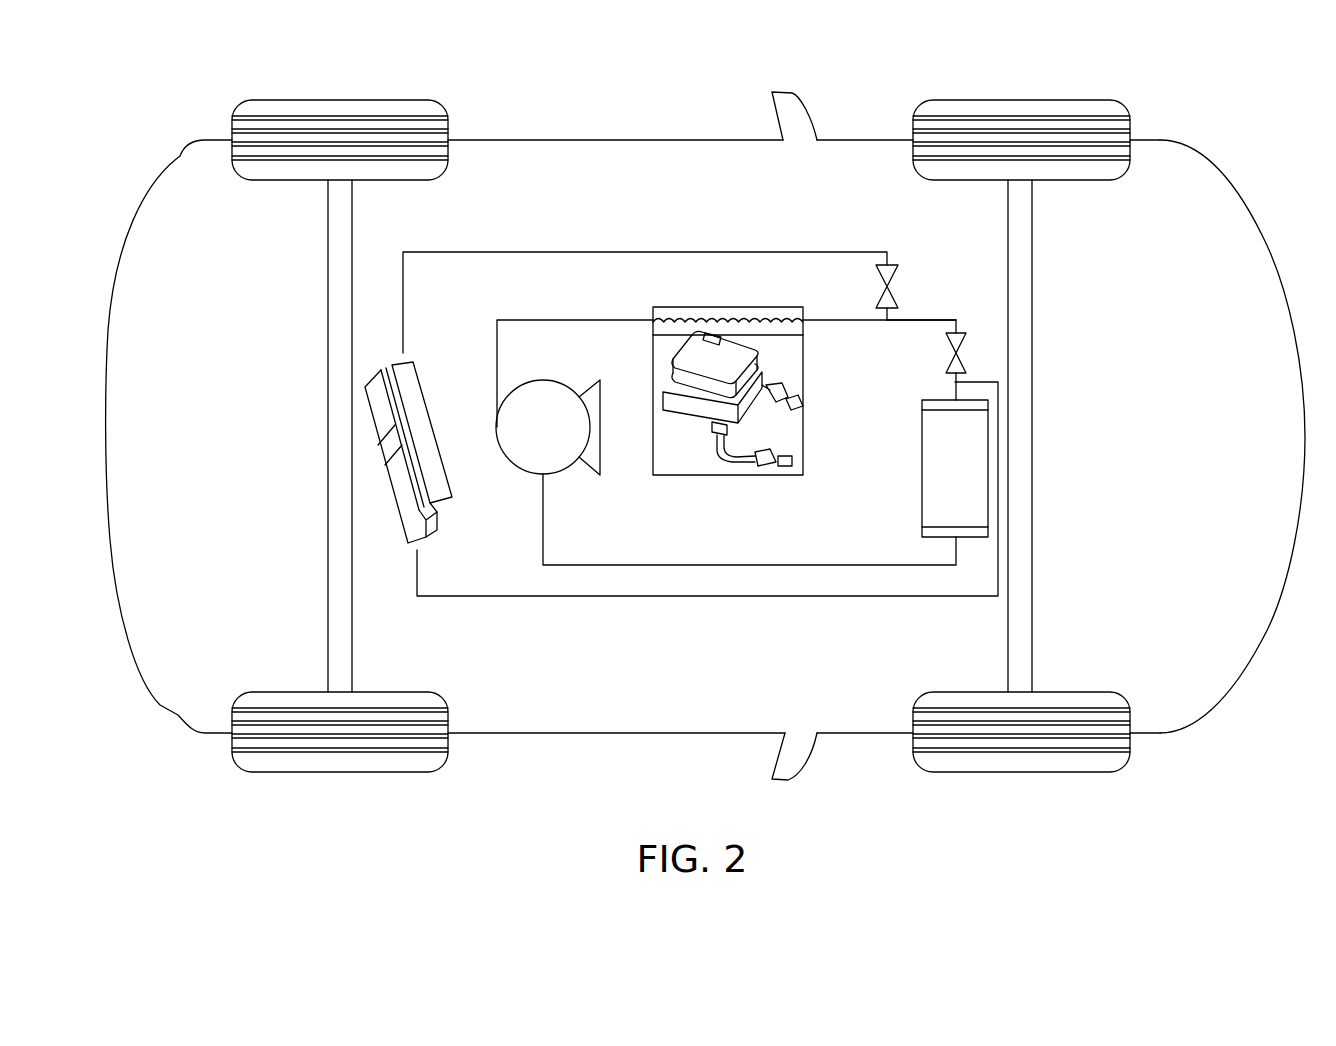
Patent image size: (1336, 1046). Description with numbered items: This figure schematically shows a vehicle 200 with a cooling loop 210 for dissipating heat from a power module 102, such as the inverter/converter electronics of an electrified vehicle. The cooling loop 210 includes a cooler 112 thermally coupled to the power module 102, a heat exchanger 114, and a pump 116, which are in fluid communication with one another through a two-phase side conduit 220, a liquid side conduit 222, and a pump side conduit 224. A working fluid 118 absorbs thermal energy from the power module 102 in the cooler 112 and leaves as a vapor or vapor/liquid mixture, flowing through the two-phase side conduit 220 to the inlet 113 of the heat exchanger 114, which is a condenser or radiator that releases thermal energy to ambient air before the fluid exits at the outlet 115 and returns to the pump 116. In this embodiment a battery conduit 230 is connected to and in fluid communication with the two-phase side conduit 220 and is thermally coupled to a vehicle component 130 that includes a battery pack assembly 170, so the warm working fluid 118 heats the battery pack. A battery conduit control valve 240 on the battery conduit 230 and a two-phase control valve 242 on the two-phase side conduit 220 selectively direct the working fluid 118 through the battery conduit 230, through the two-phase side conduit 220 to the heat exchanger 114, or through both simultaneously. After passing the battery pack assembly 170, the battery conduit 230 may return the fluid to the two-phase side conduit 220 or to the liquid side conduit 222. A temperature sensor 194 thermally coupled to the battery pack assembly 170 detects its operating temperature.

The vehicle 200 is at (1203, 110).
The cooling loop 210 is at (812, 247).
The battery conduit 230 is at (572, 252).
The pump side conduit 224 is at (572, 320).
The liquid side conduit 222 is at (727, 565).
The two-phase side conduit 220 is at (928, 320).
The battery conduit control valve 240 is at (876, 298).
The two-phase control valve 242 is at (947, 366).
The heat exchanger 114 is at (922, 477).
The inlet 113 is at (953, 398).
The outlet 115 is at (953, 538).
The pump 116 is at (552, 378).
The cooler 112 is at (717, 307).
The working fluid 118 is at (676, 330).
The power module 102 is at (690, 405).
The battery pack assembly 170 is at (427, 373).
The vehicle component 130 is at (442, 447).
The temperature sensor 194 is at (388, 448).